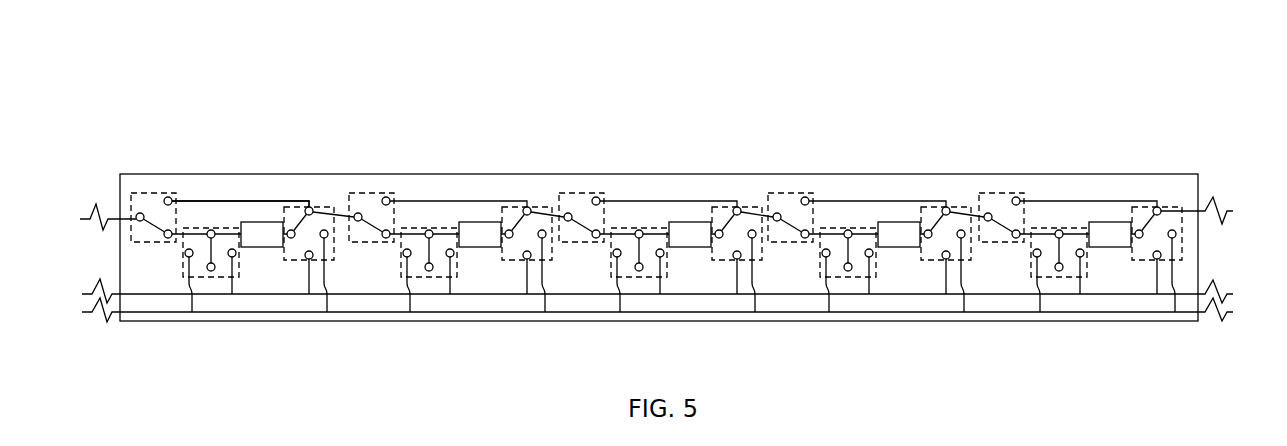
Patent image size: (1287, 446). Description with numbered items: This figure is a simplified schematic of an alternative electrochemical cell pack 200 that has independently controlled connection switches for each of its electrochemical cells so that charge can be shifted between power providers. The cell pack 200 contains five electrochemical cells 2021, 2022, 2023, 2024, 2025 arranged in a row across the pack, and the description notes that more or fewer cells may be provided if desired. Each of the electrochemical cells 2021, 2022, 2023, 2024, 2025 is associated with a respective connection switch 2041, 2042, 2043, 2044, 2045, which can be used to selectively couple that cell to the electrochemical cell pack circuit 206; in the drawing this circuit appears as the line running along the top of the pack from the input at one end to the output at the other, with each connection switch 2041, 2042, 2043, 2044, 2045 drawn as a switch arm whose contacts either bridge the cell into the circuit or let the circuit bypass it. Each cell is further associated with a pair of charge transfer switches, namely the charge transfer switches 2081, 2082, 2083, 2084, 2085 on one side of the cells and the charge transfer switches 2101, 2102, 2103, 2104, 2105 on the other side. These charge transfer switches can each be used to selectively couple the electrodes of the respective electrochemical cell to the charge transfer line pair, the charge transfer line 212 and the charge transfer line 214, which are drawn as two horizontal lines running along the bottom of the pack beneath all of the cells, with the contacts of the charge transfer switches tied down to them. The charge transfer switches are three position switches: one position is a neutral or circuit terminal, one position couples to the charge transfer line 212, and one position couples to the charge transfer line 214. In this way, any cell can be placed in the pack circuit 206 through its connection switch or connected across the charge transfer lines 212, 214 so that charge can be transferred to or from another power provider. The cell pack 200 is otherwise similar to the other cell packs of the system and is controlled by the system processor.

The electrochemical cell pack 200 is at (1052, 83).
The electrochemical cell 2021 is at (255, 297).
The electrochemical cell 2022 is at (473, 297).
The electrochemical cell 2023 is at (681, 297).
The electrochemical cell 2024 is at (891, 297).
The electrochemical cell 2025 is at (1102, 297).
The connection switch 2041 is at (164, 185).
The connection switch 2042 is at (385, 185).
The connection switch 2043 is at (597, 185).
The connection switch 2044 is at (812, 185).
The connection switch 2045 is at (1023, 185).
The electrochemical cell pack circuit 206 is at (253, 201).
The charge transfer switch 2081 is at (212, 229).
The charge transfer switch 2082 is at (434, 229).
The charge transfer switch 2083 is at (646, 229).
The charge transfer switch 2084 is at (864, 229).
The charge transfer switch 2085 is at (1074, 229).
The charge transfer switch 2101 is at (196, 207).
The charge transfer switch 2102 is at (487, 218).
The charge transfer switch 2103 is at (701, 218).
The charge transfer switch 2104 is at (908, 218).
The charge transfer switch 2105 is at (1117, 218).
The charge transfer line 212 is at (178, 313).
The charge transfer line 214 is at (152, 295).